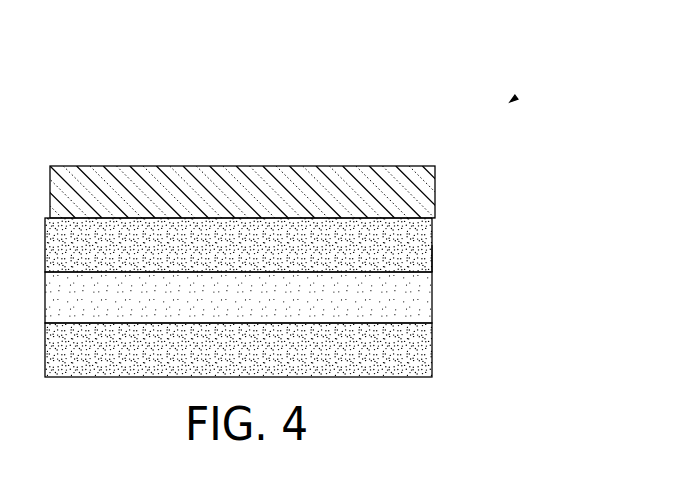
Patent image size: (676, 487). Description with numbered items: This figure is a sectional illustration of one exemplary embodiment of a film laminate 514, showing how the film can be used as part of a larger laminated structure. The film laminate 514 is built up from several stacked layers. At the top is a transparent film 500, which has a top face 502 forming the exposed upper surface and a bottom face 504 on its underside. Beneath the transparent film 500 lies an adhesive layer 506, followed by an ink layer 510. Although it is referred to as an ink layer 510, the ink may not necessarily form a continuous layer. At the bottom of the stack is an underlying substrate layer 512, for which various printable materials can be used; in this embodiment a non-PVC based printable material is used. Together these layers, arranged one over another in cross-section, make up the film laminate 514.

The transparent film 500 is at (370, 190).
The top face 502 is at (403, 167).
The bottom face 504 is at (400, 222).
The adhesive layer 506 is at (432, 253).
The ink layer 510 is at (432, 285).
The underlying substrate layer 512 is at (432, 340).
The film laminate 514 is at (515, 98).